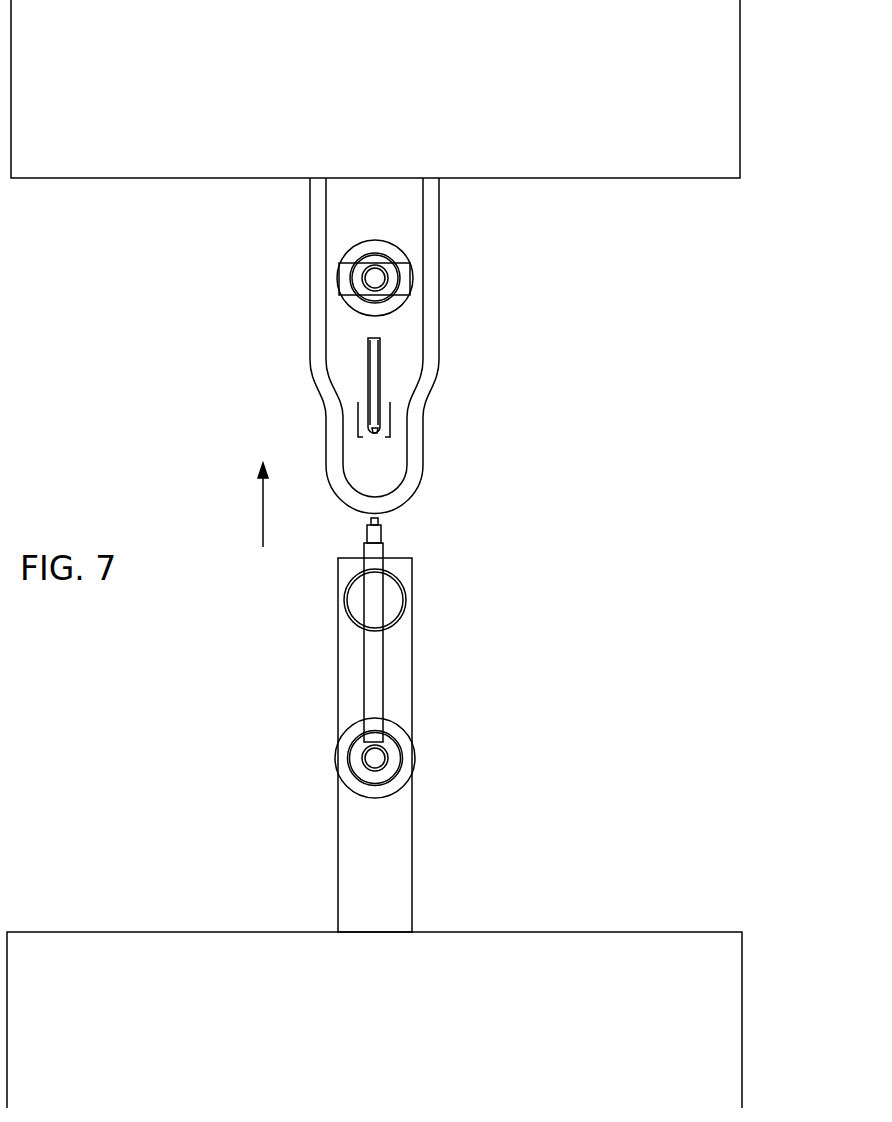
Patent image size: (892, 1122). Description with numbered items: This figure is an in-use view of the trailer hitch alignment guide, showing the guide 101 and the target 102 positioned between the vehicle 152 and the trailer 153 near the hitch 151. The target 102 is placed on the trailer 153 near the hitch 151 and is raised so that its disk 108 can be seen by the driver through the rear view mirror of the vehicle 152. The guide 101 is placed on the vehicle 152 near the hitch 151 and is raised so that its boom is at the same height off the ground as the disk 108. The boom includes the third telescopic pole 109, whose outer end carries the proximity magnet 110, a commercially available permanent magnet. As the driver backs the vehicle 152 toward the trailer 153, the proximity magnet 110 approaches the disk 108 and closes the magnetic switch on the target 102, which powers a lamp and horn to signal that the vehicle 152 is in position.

The guide 101 is at (352, 678).
The target 102 is at (365, 249).
The disk 108 is at (353, 284).
The third telescopic pole 109 is at (362, 572).
The proximity magnet 110 is at (380, 517).
The hitch 151 is at (415, 615).
The vehicle 152 is at (620, 952).
The trailer 153 is at (600, 147).